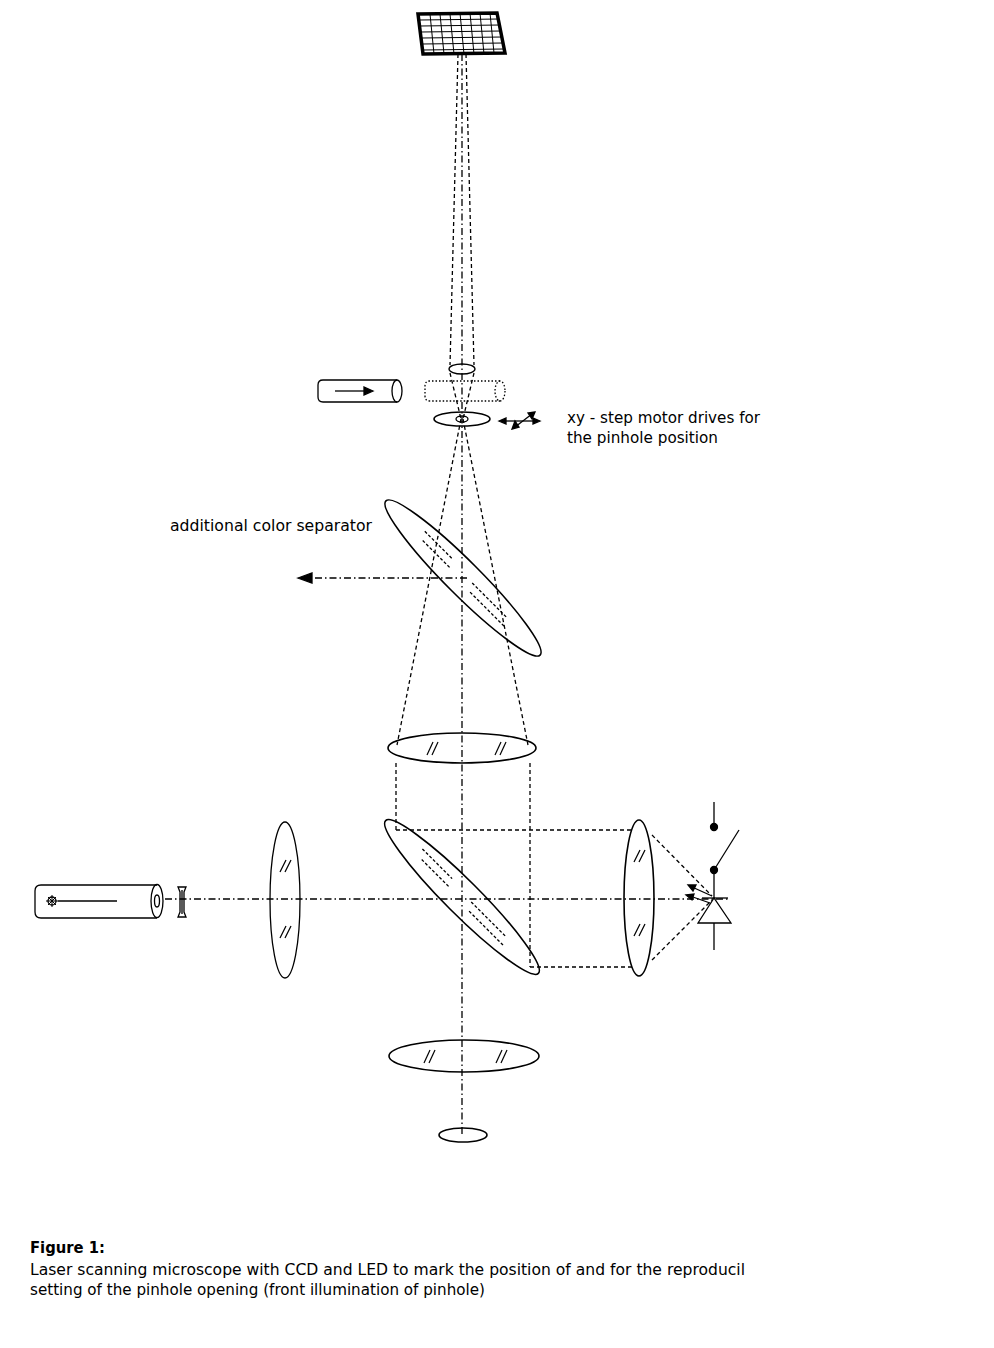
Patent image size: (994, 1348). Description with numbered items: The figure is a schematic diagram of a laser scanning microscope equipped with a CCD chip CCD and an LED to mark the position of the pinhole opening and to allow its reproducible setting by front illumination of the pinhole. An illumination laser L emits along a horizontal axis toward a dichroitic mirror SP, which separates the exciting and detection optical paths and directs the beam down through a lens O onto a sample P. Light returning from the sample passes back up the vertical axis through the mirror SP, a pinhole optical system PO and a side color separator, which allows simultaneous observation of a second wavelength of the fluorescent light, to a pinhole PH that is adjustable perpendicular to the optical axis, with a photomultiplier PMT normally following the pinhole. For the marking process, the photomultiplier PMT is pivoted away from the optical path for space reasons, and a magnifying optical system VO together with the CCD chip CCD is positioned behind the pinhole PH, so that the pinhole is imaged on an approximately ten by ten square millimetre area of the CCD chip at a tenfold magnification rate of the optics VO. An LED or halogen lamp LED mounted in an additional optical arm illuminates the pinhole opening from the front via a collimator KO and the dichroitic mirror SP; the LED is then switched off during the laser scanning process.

The CCD chip CCD is at (559, 33).
The photomultiplier PMT is at (352, 375).
The magnifying optical system (VO optics) VO is at (476, 391).
The pinhole PH is at (445, 426).
The pinhole optical system PO is at (490, 748).
The dichroitic mirror SP is at (478, 907).
The collimator KO is at (633, 884).
The element LED is at (753, 876).
The illumination laser L is at (99, 922).
The lens O is at (479, 1056).
The sample P is at (478, 1133).